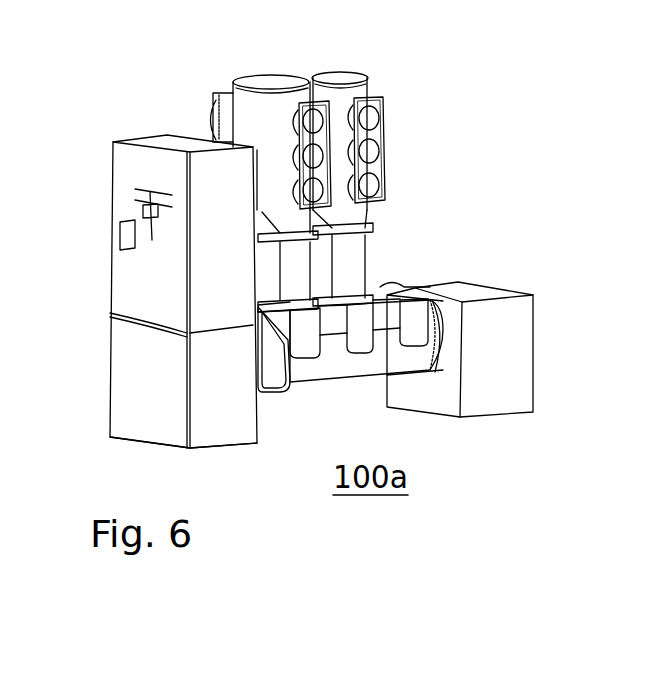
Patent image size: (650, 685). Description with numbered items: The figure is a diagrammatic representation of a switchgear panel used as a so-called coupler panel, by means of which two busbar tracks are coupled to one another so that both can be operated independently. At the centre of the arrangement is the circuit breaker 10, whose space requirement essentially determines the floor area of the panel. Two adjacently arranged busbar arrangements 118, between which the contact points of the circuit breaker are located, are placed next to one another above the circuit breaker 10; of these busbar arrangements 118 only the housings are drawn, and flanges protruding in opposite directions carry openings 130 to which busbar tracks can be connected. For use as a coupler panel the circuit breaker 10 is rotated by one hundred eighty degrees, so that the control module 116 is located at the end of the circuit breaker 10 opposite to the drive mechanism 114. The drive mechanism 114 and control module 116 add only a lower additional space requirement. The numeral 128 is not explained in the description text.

The circuit breaker 10 is at (328, 353).
The drive mechanism 114 is at (470, 377).
The control module 116 is at (122, 212).
The busbar arrangements 118 is at (325, 78).
The cabinet base 128 is at (228, 392).
The openings 130 is at (422, 185).